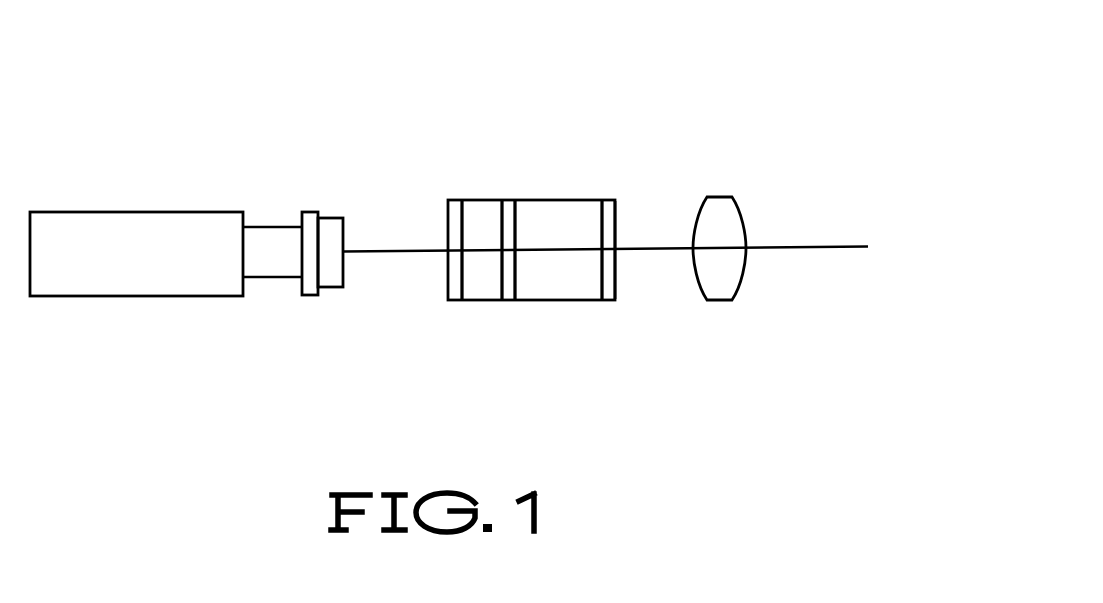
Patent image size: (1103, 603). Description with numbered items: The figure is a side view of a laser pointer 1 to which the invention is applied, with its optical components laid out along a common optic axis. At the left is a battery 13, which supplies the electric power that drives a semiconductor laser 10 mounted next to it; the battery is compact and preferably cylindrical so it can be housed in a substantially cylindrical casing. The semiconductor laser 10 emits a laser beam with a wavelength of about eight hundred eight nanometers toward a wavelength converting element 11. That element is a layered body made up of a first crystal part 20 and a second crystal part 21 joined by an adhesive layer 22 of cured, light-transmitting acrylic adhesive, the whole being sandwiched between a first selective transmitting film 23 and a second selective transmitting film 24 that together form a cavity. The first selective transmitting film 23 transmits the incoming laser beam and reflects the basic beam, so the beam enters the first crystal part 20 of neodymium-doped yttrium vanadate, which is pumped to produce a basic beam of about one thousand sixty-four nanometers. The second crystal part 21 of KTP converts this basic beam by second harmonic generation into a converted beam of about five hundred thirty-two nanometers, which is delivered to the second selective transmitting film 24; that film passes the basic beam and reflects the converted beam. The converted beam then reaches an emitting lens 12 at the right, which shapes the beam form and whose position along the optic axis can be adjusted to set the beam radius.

The laser pointer 1 is at (414, 122).
The semiconductor laser 10 is at (330, 227).
The wavelength converting element 11 is at (524, 273).
The emitting lens 12 is at (718, 200).
The battery 13 is at (137, 220).
The first crystal part 20 is at (487, 300).
The second crystal part 21 is at (557, 300).
The adhesive layer 22 is at (510, 300).
The first selective transmitting film 23 is at (455, 300).
The second selective transmitting film 24 is at (605, 300).